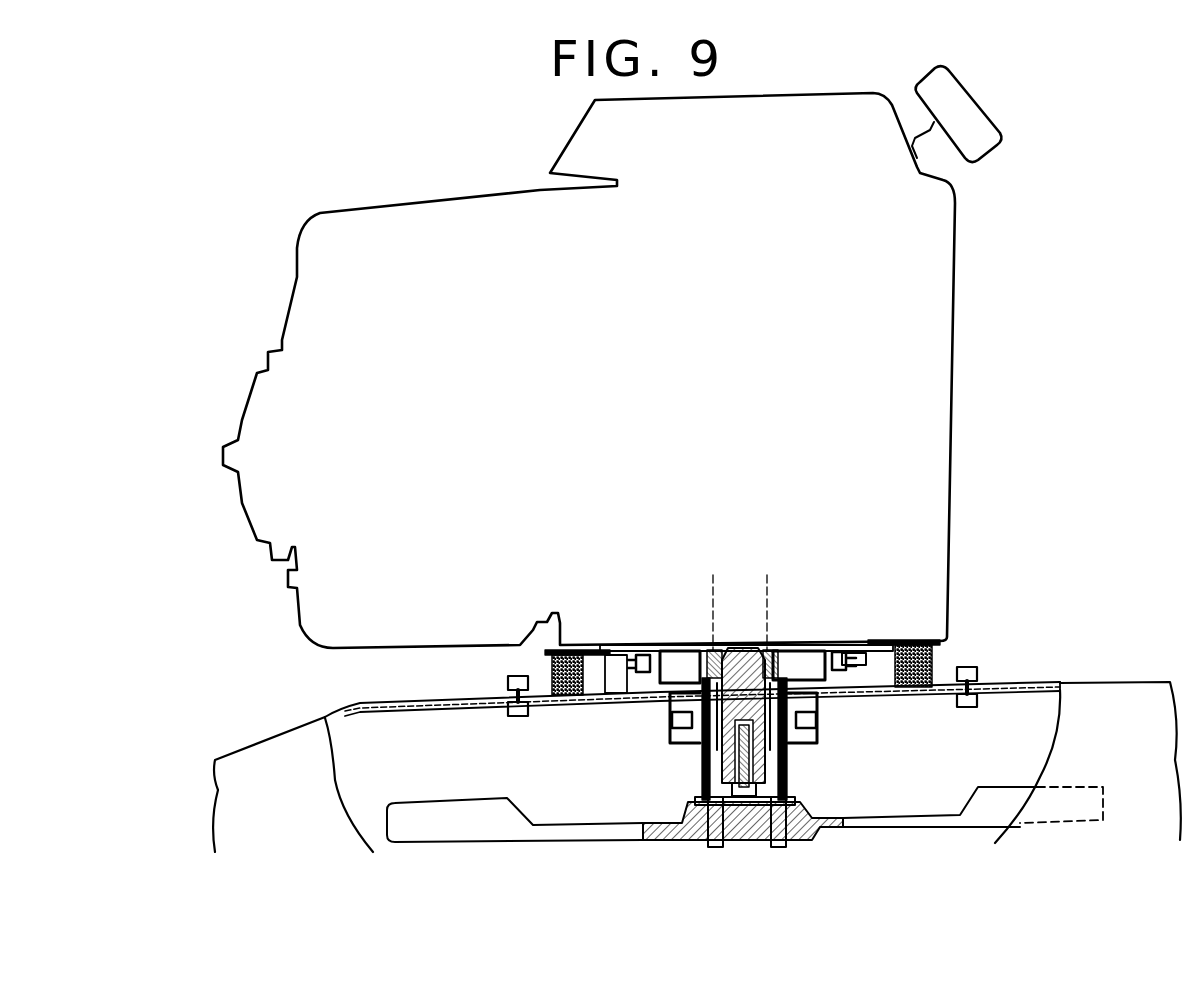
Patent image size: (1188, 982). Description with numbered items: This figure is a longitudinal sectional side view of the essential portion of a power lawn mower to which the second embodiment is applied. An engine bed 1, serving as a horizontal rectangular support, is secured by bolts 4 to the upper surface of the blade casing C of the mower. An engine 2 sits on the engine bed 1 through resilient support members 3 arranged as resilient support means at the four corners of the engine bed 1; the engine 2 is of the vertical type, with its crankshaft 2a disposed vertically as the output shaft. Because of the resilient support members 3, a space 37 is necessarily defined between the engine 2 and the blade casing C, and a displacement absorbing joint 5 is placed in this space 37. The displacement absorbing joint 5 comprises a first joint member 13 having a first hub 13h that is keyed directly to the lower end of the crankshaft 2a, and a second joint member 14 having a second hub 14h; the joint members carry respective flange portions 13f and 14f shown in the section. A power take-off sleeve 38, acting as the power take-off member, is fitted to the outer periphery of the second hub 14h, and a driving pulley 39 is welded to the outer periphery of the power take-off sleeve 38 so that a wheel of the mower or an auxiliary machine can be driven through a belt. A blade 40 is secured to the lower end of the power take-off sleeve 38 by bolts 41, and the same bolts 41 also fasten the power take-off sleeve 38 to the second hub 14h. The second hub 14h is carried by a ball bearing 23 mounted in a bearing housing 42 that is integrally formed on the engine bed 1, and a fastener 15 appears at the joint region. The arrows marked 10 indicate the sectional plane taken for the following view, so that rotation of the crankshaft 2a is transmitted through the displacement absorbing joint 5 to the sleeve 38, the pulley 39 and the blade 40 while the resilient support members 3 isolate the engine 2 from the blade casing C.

The engine bed 1 is at (993, 677).
The engine 2 is at (682, 408).
The crankshaft 2a is at (740, 667).
The resilient support members 3 is at (552, 665).
The bolts 4 is at (513, 717).
The displacement absorbing joint 5 is at (670, 645).
The section line FIG. 10 is at (473, 668).
The first joint member 13 is at (815, 697).
The flange of clamp member 13f is at (850, 647).
The first hub 13h is at (778, 648).
The second joint member 14 is at (667, 703).
The flange of clamp member 14f is at (653, 647).
The second hub 14h is at (673, 648).
The bolt 15 is at (853, 637).
The ball bearing 23 is at (675, 737).
The space 37 is at (610, 678).
The power take-off sleeve 38 is at (790, 780).
The driving pulley 39 is at (807, 747).
The blade 40 is at (552, 833).
The bolts 41 is at (797, 845).
The bearing housing 42 is at (803, 695).
The blade casing C is at (278, 742).